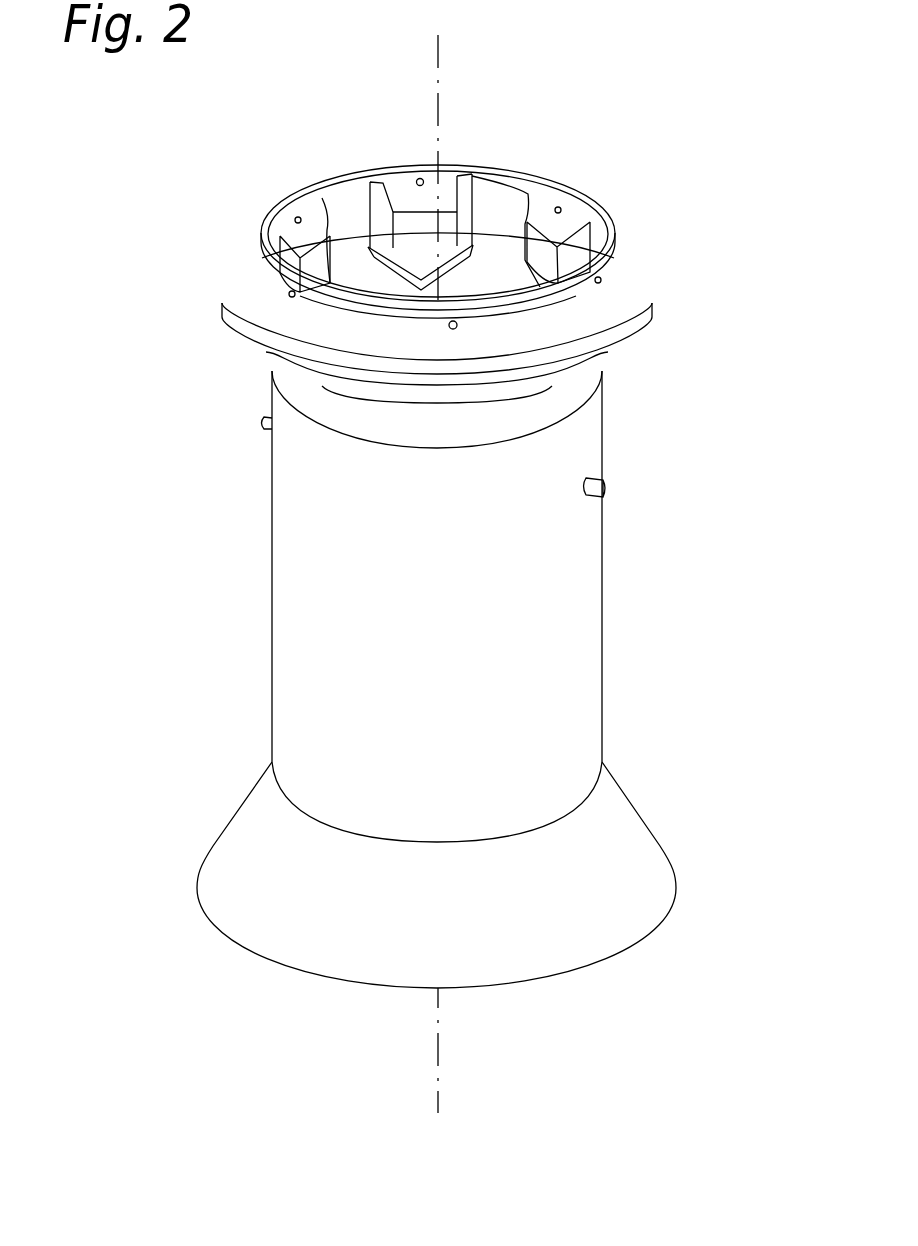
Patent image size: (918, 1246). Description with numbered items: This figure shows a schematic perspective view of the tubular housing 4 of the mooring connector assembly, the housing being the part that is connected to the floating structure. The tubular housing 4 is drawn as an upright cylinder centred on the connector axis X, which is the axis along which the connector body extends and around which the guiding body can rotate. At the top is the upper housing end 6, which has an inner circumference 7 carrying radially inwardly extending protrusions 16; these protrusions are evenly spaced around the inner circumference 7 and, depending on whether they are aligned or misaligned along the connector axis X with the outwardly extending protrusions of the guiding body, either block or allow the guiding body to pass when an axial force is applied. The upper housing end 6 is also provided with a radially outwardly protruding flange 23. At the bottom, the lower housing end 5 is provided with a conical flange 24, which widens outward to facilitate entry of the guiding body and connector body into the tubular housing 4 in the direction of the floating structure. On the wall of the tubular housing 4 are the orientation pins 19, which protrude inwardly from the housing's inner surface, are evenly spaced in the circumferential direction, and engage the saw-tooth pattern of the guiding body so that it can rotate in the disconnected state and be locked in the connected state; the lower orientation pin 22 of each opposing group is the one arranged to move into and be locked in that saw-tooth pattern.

The tubular housing 4 is at (642, 662).
The lower housing end 5 is at (620, 957).
The upper housing end 6 is at (654, 261).
The inner circumference 7 is at (503, 208).
The radially inwardly extending protrusions 16 is at (405, 190).
The orientation pins 19 is at (266, 426).
The lower orientation pin 22 is at (421, 463).
The radially outwardly protruding flange 23 is at (232, 290).
The conical flange 24 is at (674, 882).
The connector axis X is at (438, 1058).